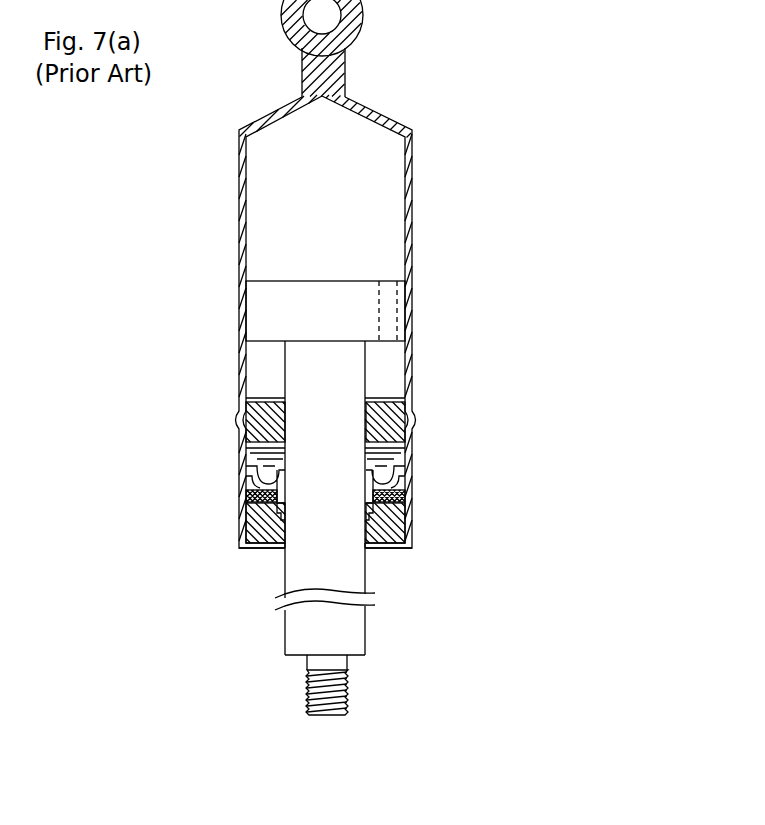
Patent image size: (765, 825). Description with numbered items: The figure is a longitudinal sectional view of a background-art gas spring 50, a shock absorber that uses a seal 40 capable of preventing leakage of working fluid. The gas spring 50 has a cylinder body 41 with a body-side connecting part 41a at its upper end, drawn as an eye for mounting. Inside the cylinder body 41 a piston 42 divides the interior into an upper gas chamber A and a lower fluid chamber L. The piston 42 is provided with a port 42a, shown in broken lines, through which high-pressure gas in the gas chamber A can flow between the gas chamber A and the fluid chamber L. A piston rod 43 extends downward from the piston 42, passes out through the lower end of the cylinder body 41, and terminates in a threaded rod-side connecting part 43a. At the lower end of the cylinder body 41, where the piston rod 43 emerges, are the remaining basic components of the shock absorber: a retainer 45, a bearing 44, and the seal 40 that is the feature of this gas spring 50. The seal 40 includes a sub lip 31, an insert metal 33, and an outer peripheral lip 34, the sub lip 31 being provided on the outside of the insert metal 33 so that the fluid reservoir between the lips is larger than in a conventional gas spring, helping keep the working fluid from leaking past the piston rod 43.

The gas spring 50 is at (423, 142).
The body-side connecting part 41a is at (353, 28).
The cylinder body 41 is at (412, 367).
The gas chamber A is at (387, 218).
The piston 42 is at (262, 310).
The port 42a is at (390, 312).
The piston rod 43 is at (282, 568).
The rod-side connecting part 43a is at (347, 692).
The retainer 45 is at (390, 415).
The fluid chamber L is at (252, 457).
The outer peripheral lip 34 is at (403, 452).
The seal 40 is at (400, 480).
The insert metal 33 is at (403, 498).
The bearing 44 is at (400, 532).
The sub lip 31 is at (387, 550).